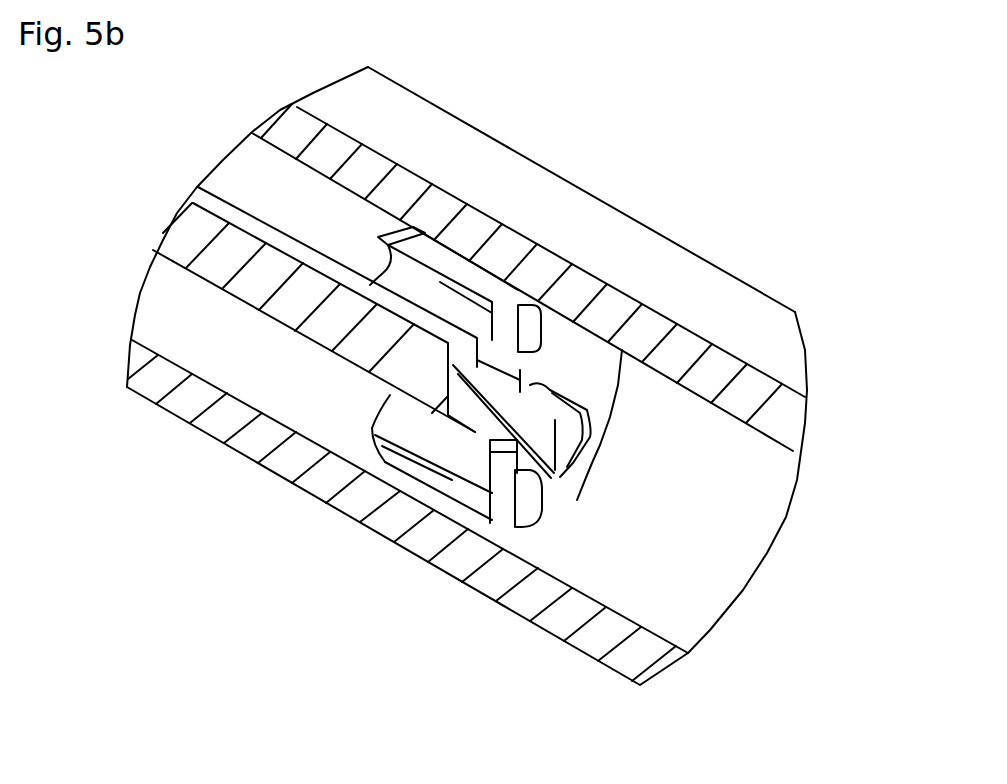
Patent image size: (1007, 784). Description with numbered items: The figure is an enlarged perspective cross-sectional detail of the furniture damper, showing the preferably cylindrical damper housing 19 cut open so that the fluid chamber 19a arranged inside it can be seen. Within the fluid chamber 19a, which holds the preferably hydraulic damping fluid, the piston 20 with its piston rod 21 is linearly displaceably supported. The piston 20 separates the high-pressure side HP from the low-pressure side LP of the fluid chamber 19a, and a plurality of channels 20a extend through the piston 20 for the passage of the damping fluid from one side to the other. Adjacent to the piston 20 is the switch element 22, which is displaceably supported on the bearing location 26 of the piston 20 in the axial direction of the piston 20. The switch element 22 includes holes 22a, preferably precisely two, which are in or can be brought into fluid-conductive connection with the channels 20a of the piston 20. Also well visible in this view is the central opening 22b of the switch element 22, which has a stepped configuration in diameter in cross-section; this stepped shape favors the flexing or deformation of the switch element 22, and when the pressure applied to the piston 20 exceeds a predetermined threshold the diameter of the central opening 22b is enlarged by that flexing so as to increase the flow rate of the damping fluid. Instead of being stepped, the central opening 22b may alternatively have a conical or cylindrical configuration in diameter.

The damper housing 19 is at (300, 137).
The fluid chamber 19a is at (752, 537).
The piston 20 is at (437, 473).
The channel 20a is at (447, 293).
The piston rod 21 is at (192, 250).
The switch element 22 is at (583, 463).
The hole 22a is at (523, 343).
The central opening 22b is at (500, 450).
The bearing location 26 is at (527, 417).
The low-pressure side LP is at (243, 357).
The high-pressure side HP is at (708, 593).